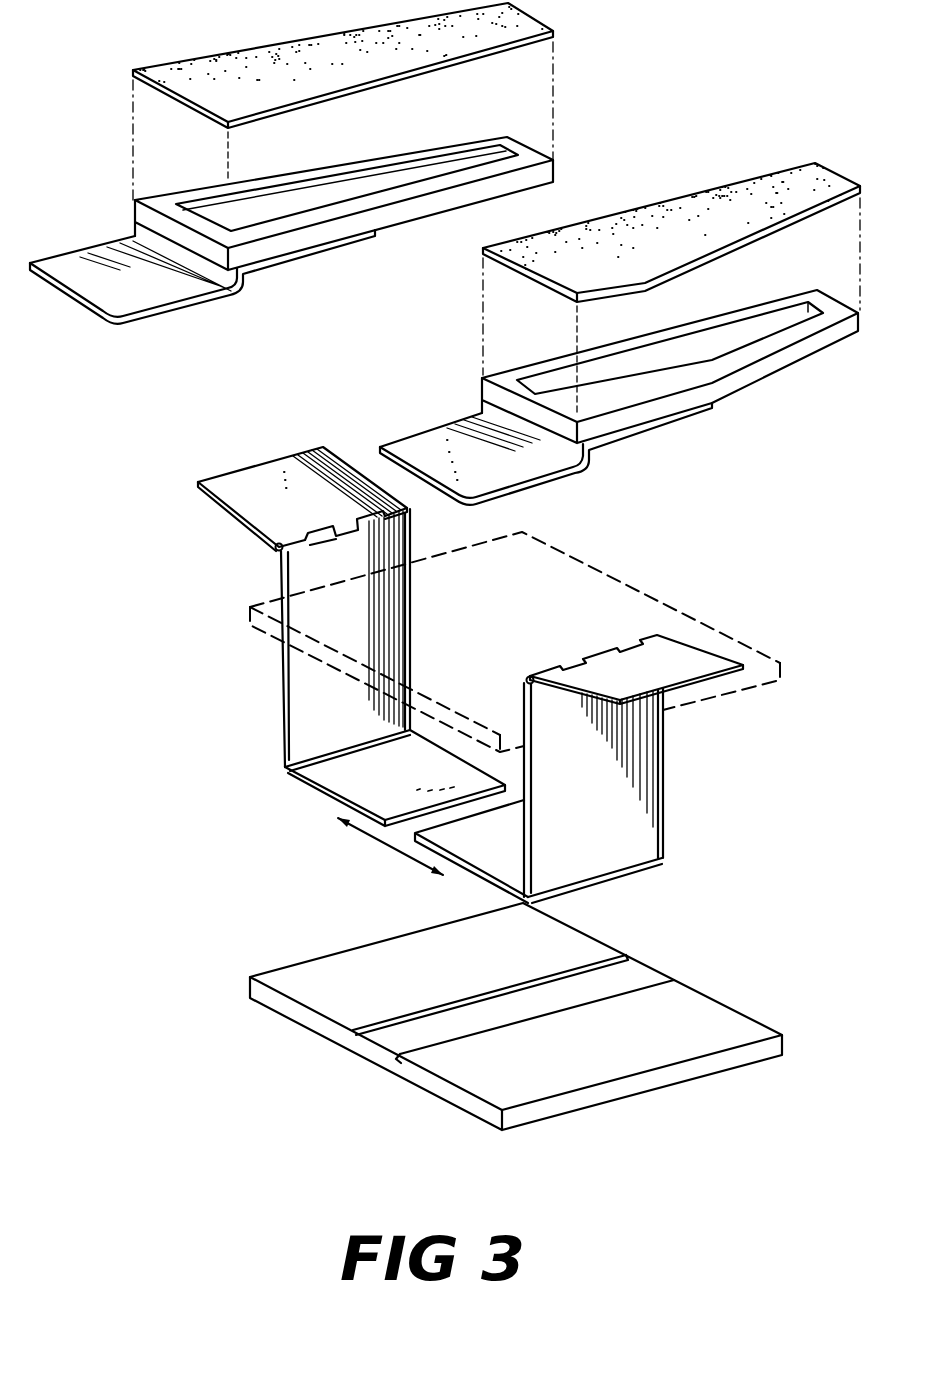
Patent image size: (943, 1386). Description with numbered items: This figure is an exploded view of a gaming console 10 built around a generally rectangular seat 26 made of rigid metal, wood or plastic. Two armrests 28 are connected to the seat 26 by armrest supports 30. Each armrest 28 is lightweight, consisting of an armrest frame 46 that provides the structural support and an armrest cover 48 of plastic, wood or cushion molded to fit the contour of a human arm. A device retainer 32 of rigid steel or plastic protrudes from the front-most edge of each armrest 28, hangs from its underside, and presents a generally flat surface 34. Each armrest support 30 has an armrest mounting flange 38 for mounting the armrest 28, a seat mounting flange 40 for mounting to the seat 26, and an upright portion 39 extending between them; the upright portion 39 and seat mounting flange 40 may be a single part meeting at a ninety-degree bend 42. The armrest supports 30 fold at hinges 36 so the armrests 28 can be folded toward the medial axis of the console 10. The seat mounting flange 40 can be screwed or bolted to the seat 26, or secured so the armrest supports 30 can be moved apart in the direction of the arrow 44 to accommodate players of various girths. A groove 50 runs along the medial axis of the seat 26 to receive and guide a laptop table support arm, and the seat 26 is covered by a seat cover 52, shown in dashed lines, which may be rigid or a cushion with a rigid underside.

The gaming console 10 is at (752, 72).
The seat 26 is at (317, 972).
The armrest 28 is at (566, 68).
The armrest support 30 is at (266, 663).
The device retainer 32 is at (153, 310).
The flat surface 34 is at (125, 250).
The hinge 36 is at (275, 548).
The armrest mounting flange 38 is at (260, 478).
The upright portion 39 is at (303, 705).
The seat mounting flange 40 is at (345, 782).
The 90 degree bend 42 is at (282, 768).
The arrow 44 is at (397, 852).
The armrest frame 46 is at (425, 208).
The armrest cover 48 is at (202, 67).
The groove 50 is at (637, 980).
The seat cover 52 is at (613, 578).